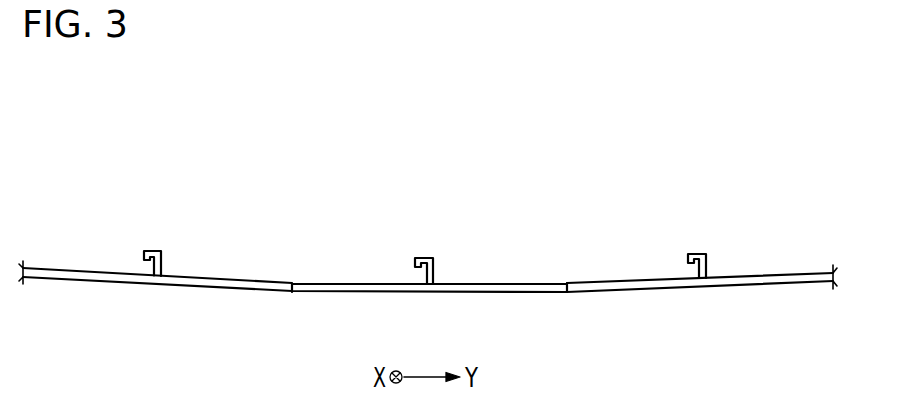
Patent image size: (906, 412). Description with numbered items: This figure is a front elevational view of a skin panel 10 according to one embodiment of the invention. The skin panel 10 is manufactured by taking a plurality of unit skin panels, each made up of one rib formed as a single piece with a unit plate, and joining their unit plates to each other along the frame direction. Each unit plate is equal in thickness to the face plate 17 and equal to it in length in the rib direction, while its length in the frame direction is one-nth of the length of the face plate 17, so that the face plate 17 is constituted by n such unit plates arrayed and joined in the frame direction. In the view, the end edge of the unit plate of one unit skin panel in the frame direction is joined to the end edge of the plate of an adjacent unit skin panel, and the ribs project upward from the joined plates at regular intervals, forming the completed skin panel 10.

The skin panel 10 is at (762, 153).
The face plate 17 is at (98, 281).